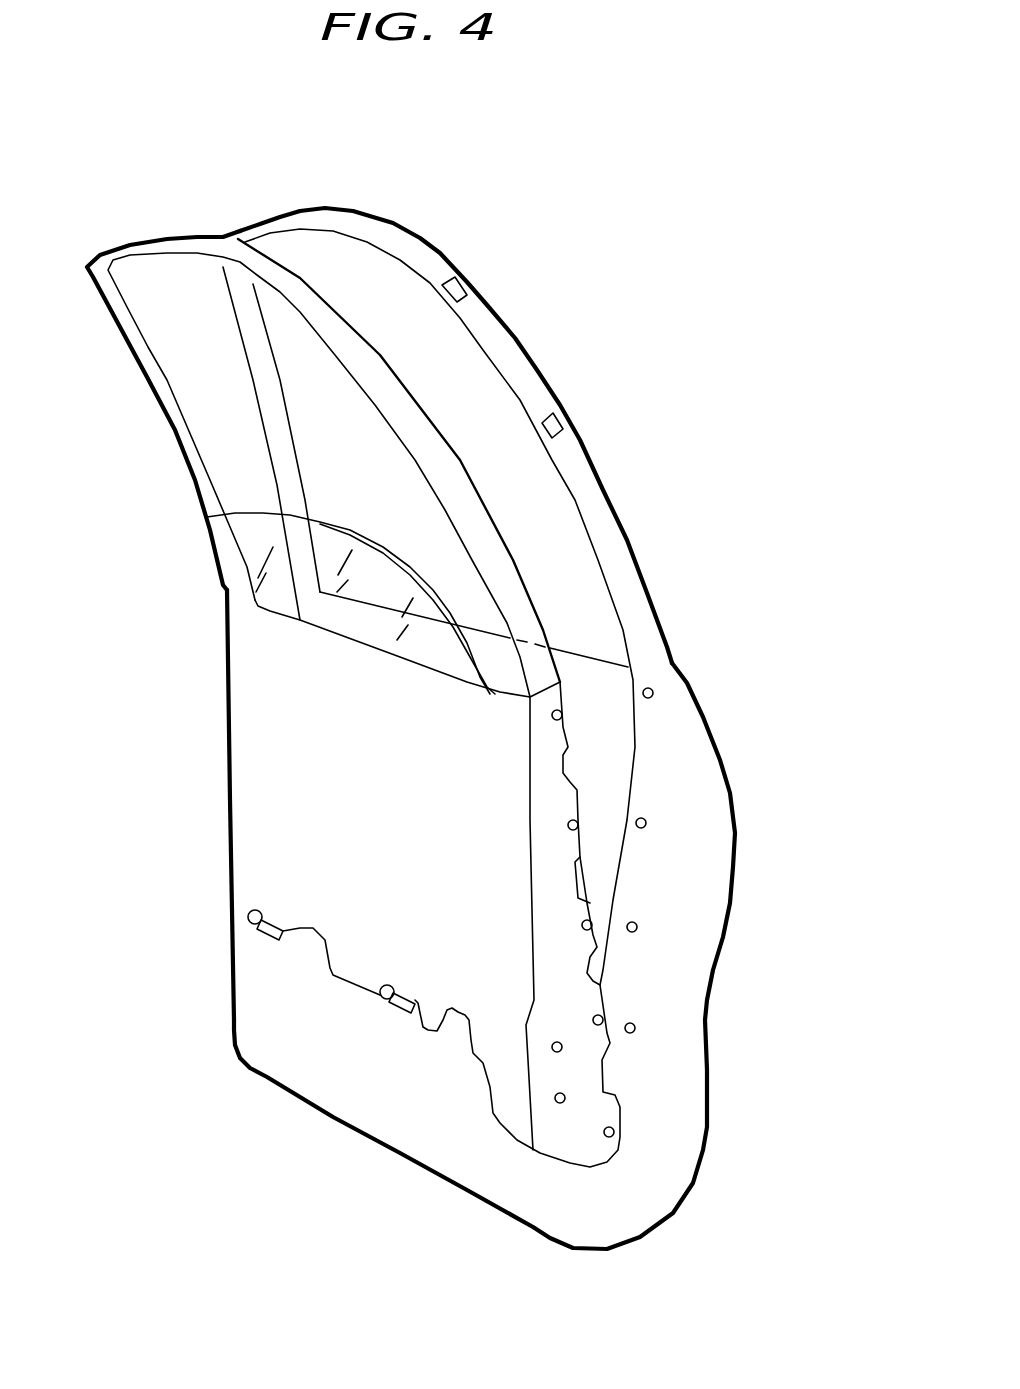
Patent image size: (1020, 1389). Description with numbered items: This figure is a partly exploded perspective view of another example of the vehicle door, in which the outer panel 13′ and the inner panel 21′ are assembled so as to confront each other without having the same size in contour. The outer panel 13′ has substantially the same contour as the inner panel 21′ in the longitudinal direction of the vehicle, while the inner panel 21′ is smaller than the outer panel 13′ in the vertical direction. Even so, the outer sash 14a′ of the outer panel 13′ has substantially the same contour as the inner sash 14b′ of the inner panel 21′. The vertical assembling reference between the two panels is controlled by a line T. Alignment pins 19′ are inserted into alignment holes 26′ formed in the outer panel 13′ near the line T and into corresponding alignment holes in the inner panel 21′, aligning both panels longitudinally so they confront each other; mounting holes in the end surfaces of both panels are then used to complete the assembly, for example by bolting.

The outer panel 13′ is at (740, 907).
The outer sash 14a′ is at (545, 363).
The inner sash 14b′ is at (166, 226).
The inner panel 21′ is at (222, 740).
The alignment pin 19′ is at (277, 1008).
The alignment hole 26′ is at (246, 1013).
The line T is at (308, 925).